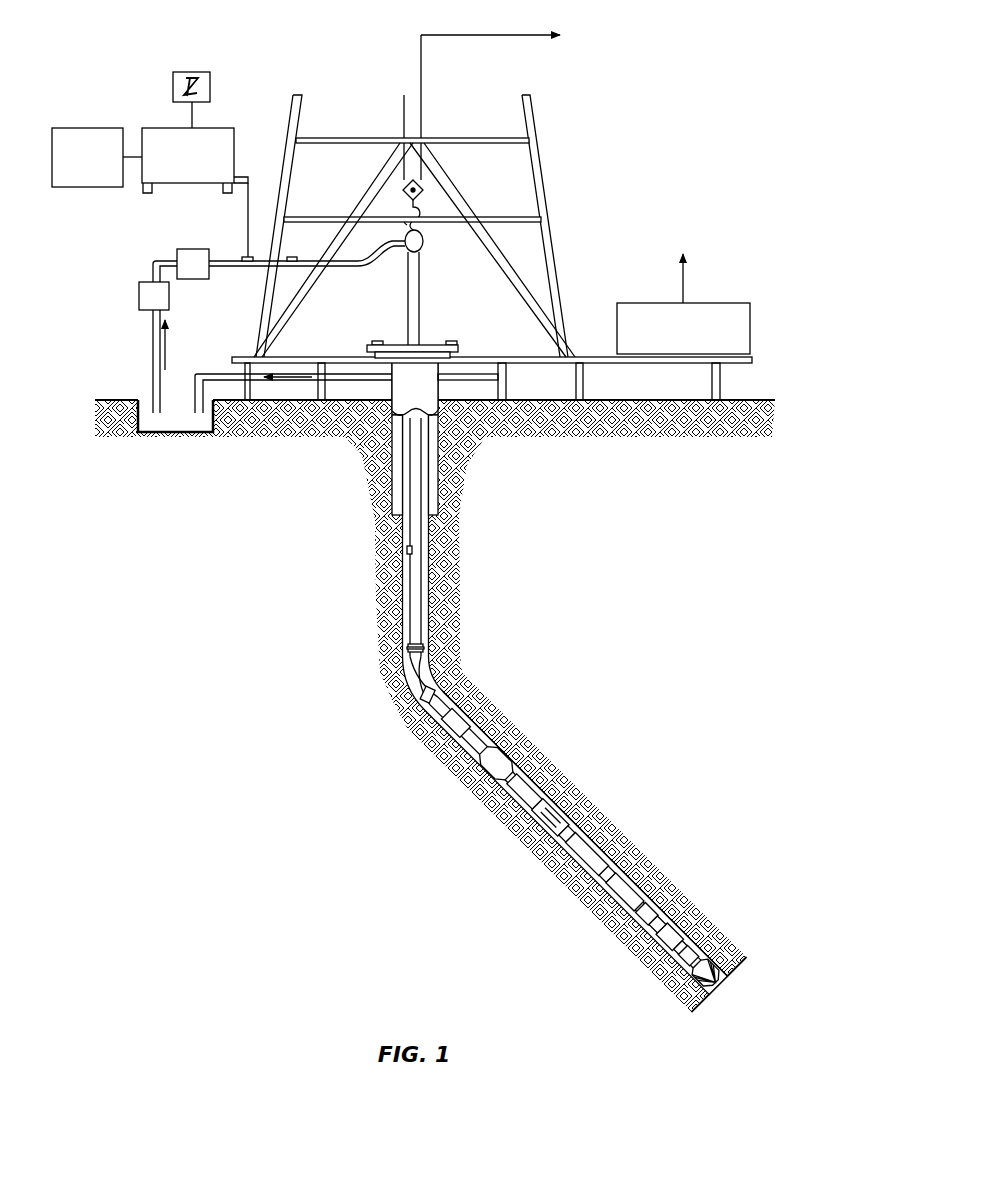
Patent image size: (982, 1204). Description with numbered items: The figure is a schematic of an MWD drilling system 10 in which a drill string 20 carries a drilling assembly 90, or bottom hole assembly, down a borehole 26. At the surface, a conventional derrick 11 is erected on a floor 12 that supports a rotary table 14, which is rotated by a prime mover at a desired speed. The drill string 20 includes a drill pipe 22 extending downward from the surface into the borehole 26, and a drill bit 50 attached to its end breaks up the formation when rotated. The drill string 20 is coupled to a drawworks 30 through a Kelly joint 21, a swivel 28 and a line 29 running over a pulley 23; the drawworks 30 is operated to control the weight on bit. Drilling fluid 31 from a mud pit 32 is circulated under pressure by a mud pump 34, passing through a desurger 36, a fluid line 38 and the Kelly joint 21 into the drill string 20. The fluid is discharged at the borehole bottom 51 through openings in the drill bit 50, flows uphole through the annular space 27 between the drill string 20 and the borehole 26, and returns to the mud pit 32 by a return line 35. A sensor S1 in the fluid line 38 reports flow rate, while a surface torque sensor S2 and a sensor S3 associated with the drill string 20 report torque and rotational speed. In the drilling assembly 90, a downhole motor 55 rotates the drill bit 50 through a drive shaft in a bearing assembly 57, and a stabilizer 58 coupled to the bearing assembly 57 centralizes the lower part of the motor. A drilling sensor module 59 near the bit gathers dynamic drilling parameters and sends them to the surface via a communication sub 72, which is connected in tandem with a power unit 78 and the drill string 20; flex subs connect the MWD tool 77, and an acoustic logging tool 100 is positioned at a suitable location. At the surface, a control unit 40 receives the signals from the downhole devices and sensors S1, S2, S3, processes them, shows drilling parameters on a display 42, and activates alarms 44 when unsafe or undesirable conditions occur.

The MWD drilling system 10 is at (350, 45).
The derrick 11 is at (553, 228).
The floor 12 is at (570, 356).
The rotary table 14 is at (423, 343).
The drill string 20 is at (426, 596).
The Kelly joint 21 is at (421, 282).
The drill pipe 22 is at (400, 572).
The pulley 23 is at (415, 190).
The borehole 26 is at (432, 672).
The annular space 27 is at (447, 700).
The swivel 28 is at (393, 265).
The line 29 is at (422, 108).
The drawworks 30 is at (720, 303).
The drilling fluid 31 is at (143, 402).
The mud pit 32 is at (163, 434).
The mud pump 34 is at (142, 284).
The return line 35 is at (350, 382).
The desurger 36 is at (182, 249).
The fluid line 38 is at (153, 333).
The surface control unit 40 is at (175, 128).
The display/monitor 42 is at (184, 72).
The alarms 44 is at (97, 188).
The drill bit 50 is at (706, 973).
The borehole bottom 51 is at (700, 1008).
The downhole motor 55 is at (565, 832).
The bearing assembly 57 is at (680, 947).
The stabilizer 58 is at (688, 955).
The drilling sensor module 59 is at (657, 924).
The communication sub 72 is at (407, 676).
The MWD tool 77 is at (496, 763).
The power unit 78 is at (428, 695).
The drilling assembly 90 is at (612, 742).
The acoustic logging tool 100 is at (670, 937).
The sensor S1 is at (288, 256).
The surface torque sensor S2 is at (452, 341).
The sensor S3 is at (378, 341).